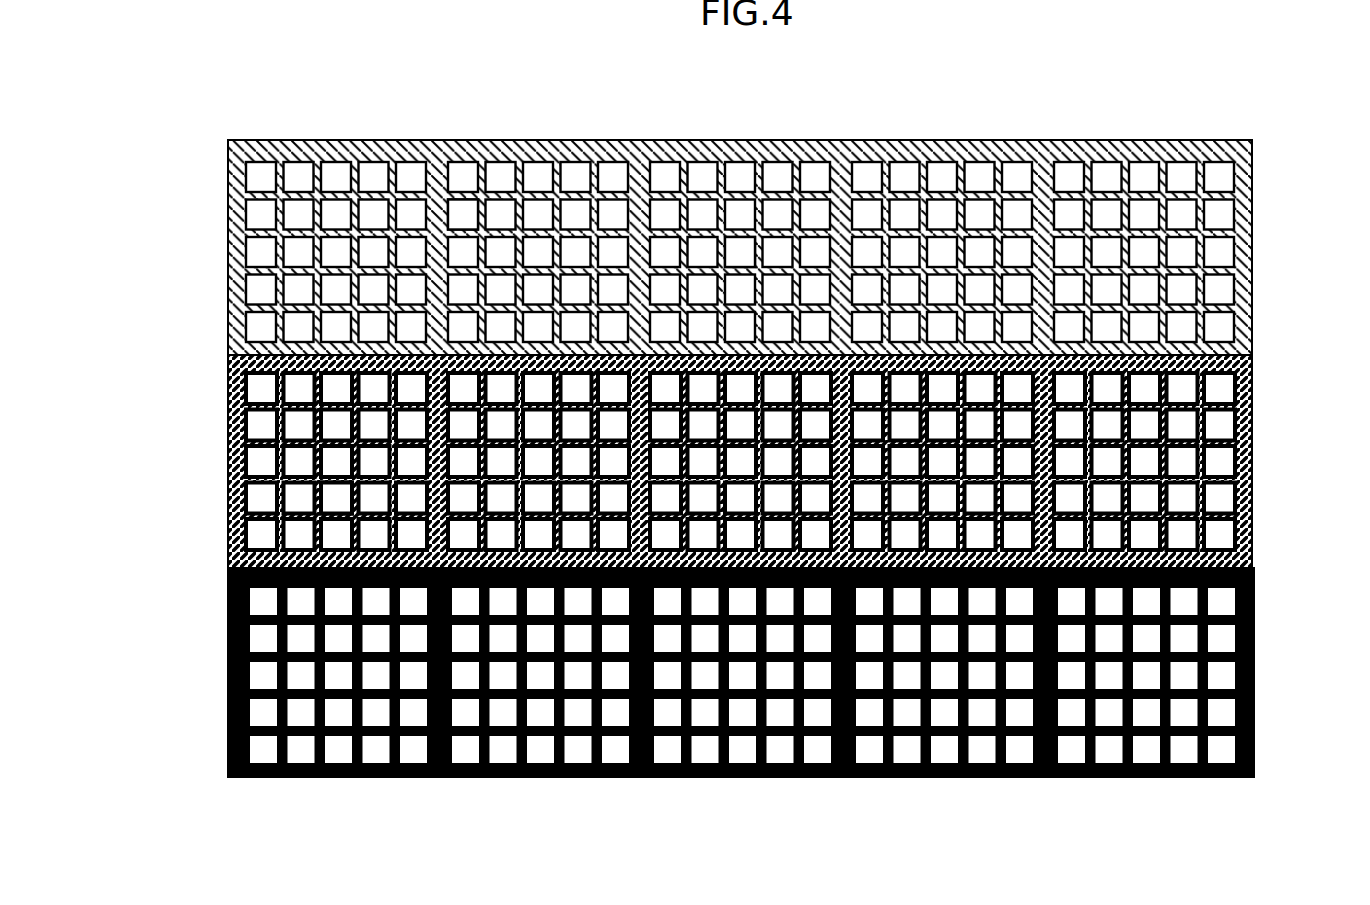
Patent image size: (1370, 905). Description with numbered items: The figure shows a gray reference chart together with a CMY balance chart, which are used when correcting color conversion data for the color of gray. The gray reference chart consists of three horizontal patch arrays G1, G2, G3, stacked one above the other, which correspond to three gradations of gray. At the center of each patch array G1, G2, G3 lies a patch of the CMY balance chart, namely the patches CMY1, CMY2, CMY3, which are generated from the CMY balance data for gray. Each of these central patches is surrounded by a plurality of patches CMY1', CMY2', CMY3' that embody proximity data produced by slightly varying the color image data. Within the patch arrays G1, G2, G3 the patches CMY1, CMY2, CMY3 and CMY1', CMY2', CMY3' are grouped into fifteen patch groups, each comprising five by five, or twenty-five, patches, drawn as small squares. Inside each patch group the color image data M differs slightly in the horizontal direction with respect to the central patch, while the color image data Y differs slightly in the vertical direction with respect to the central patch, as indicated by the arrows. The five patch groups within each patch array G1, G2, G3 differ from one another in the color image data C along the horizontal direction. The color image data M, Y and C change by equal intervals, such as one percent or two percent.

The patch array of the gray reference chart G1 is at (776, 217).
The patch array of the gray reference chart G2 is at (724, 326).
The patch array of the gray reference chart G3 is at (772, 710).
The patch of the CMY balance chart CMY1 is at (735, 176).
The proximity patch CMY1' is at (460, 155).
The patch of the CMY balance chart CMY2 is at (857, 281).
The proximity patch CMY2' is at (241, 462).
The patch of the CMY balance chart CMY3 is at (766, 757).
The proximity patch CMY3' is at (569, 776).
The color image data C is at (1111, 114).
The color image data M is at (800, 343).
The color image data Y is at (638, 155).